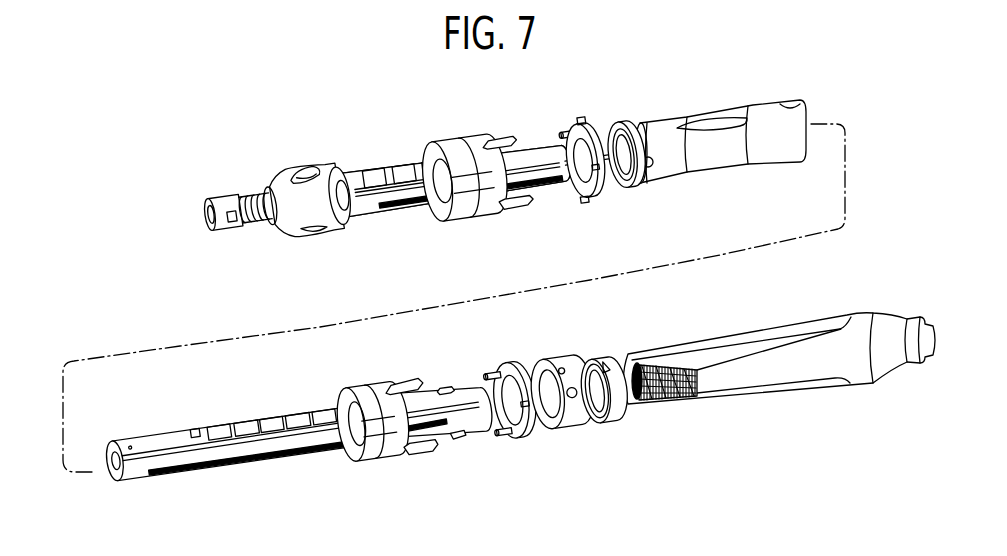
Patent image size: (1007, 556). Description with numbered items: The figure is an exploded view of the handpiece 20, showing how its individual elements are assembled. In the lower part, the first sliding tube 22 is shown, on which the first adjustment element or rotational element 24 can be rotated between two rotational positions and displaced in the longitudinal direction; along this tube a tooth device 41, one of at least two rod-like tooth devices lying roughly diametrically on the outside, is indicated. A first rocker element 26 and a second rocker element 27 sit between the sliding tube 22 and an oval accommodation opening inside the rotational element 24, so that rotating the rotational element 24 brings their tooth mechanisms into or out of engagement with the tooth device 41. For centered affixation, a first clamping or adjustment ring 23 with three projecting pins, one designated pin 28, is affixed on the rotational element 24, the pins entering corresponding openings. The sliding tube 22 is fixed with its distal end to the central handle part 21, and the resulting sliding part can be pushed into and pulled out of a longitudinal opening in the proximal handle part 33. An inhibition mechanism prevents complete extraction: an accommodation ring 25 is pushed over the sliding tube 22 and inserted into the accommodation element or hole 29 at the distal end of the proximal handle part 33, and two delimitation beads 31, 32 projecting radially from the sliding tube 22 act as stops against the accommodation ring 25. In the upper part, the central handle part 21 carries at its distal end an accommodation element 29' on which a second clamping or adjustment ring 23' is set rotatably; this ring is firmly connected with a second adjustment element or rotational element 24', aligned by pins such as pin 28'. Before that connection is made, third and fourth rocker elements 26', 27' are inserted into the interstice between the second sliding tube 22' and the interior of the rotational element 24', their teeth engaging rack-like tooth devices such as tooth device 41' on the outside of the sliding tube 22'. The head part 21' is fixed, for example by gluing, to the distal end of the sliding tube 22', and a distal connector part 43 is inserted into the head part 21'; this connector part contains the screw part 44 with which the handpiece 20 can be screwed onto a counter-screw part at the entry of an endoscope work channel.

The handpiece 20 is at (352, 163).
The central handle part 21 is at (720, 159).
The head part 21' is at (306, 186).
The first sliding tube 22 is at (298, 454).
The second sliding tube 22' is at (488, 173).
The first clamping or adjustment ring 23 is at (514, 421).
The second clamping or adjustment ring 23' is at (585, 181).
The first adjustment element or rotational element 24 is at (373, 445).
The second adjustment element or rotational element 24' is at (465, 199).
The accommodation ring 25 is at (563, 428).
The first rocker element 26 is at (423, 469).
The third rocker element 26' is at (519, 231).
The second rocker element 27 is at (403, 364).
The fourth rocker element 27' is at (500, 120).
The pin 28 is at (495, 377).
The pin 28' is at (552, 114).
The accommodation element or hole 29 is at (607, 419).
The accommodation element 29' is at (631, 183).
The delimitation bead 31 is at (452, 437).
The delimitation bead 32 is at (448, 390).
The proximal handle part 33 is at (773, 371).
The tooth device 41 is at (297, 467).
The rack-like tooth device 41' is at (471, 221).
The distal connector part 43 is at (221, 199).
The screw part 44 is at (213, 235).